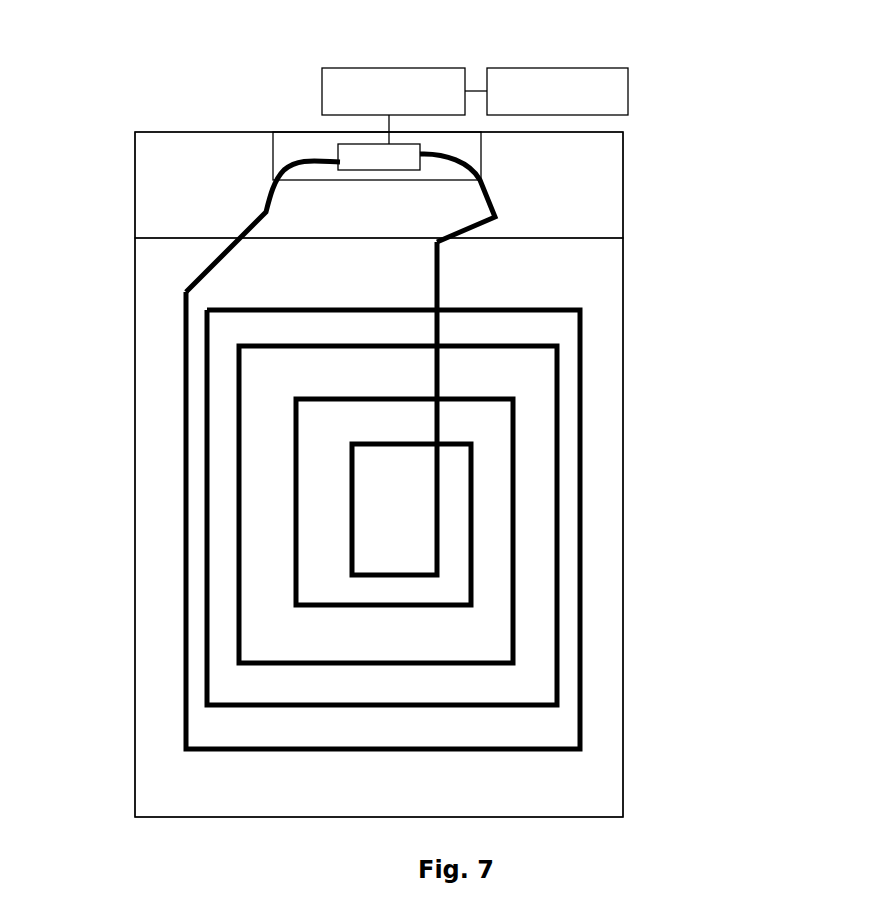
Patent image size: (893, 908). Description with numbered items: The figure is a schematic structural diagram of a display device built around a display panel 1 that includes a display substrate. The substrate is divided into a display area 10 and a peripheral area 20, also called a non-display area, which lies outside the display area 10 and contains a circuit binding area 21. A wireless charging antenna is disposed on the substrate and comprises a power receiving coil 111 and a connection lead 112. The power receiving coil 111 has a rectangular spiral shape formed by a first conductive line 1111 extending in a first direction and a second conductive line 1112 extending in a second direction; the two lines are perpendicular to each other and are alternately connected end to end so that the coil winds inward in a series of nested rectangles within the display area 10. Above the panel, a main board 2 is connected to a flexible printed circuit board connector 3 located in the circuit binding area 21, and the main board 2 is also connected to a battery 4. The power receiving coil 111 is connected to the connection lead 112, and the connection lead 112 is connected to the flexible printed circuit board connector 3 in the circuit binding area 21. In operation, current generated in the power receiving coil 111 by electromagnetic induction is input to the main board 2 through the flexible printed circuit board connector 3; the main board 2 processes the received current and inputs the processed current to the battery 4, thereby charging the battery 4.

The display panel 1 is at (135, 352).
The main board 2 is at (372, 66).
The flexible printed circuit board connector 3 is at (360, 160).
The battery 4 is at (538, 67).
The display area 10 is at (612, 552).
The peripheral area 20 is at (560, 172).
The circuit binding area 21 is at (273, 160).
The power receiving coil 111 is at (498, 451).
The first conductive line 1111 is at (552, 308).
The second conductive line 1112 is at (581, 395).
The connection lead 112 is at (490, 198).